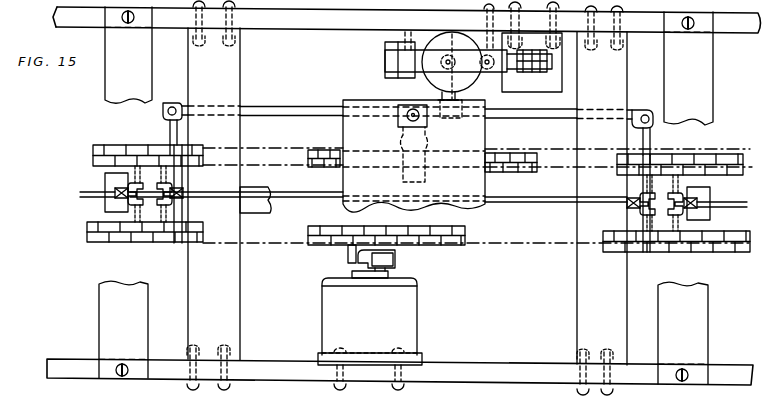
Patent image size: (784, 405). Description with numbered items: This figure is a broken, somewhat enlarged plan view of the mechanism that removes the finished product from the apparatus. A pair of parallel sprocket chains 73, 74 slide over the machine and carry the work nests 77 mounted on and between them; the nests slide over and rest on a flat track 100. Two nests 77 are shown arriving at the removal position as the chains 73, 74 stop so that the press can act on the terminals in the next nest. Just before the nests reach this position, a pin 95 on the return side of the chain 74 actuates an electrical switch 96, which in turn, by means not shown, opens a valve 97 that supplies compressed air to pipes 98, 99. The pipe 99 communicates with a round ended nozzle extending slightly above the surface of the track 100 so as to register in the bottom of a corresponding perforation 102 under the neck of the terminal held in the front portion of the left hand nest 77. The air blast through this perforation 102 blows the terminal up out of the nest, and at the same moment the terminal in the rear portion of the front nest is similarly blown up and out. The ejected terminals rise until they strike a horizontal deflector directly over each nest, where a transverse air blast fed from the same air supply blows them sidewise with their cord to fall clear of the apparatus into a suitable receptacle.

The sprocket chain 73 is at (490, 173).
The sprocket chain 74 is at (450, 245).
The work nest 77 is at (154, 232).
The pin 95 is at (350, 258).
The electrical switch 96 is at (413, 330).
The valve 97 is at (437, 76).
The pipe 98 is at (275, 112).
The pipe 99 is at (565, 115).
The flat track 100 is at (258, 205).
The perforation 102 is at (186, 186).